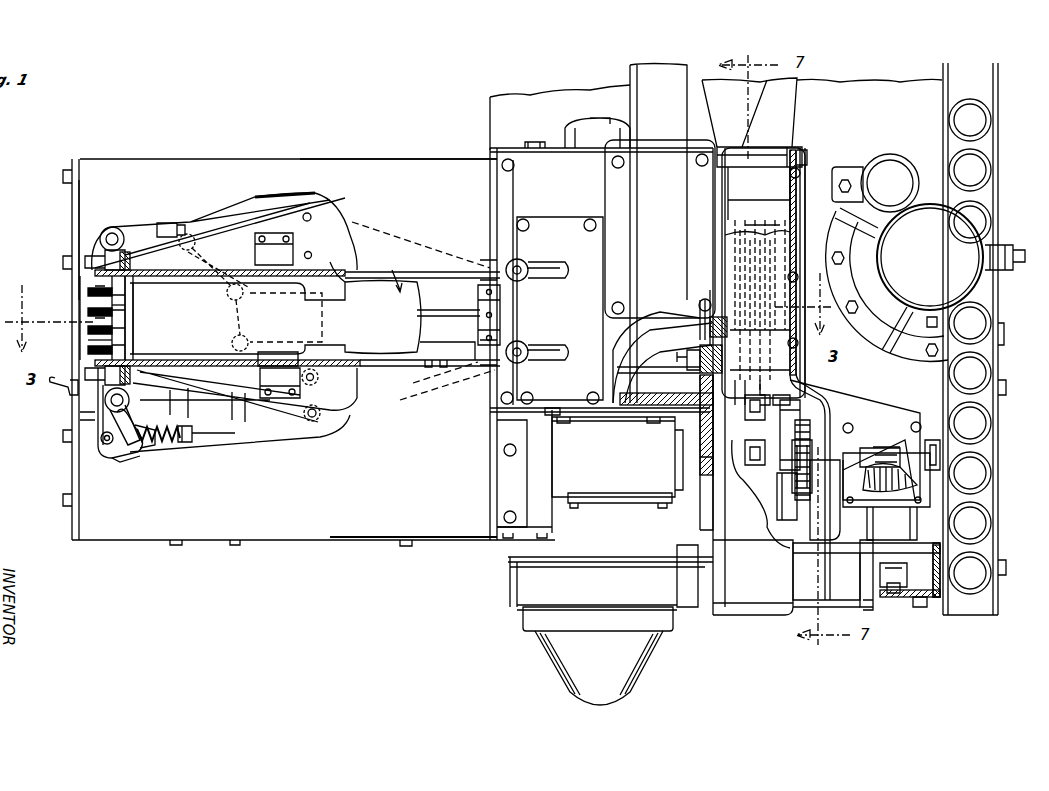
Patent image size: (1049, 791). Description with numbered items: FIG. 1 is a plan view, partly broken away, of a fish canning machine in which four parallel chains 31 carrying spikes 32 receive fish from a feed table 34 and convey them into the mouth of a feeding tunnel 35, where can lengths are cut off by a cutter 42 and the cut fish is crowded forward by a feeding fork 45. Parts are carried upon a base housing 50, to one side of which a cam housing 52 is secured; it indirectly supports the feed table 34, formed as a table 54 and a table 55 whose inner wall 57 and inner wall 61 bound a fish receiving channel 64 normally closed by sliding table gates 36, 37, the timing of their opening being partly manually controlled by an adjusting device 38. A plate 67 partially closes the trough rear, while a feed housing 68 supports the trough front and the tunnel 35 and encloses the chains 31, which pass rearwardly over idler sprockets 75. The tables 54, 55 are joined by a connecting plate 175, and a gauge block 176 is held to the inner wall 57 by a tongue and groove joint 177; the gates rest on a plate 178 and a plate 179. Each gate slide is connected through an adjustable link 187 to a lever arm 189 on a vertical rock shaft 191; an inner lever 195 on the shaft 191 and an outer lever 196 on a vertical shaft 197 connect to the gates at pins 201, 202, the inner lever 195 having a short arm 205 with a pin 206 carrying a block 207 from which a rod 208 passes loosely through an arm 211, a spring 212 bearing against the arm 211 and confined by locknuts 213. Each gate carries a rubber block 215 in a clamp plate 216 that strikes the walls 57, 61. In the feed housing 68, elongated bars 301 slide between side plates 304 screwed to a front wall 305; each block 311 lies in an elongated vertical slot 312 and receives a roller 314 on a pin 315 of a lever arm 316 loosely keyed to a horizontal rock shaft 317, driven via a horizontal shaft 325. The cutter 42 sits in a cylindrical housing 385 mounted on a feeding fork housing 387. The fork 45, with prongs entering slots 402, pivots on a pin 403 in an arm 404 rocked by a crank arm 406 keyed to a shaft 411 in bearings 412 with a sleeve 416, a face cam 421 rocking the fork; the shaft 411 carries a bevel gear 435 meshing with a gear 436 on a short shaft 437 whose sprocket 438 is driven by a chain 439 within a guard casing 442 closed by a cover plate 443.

The parallel chains 31 is at (88, 310).
The spikes 32 is at (88, 350).
The feed table 34 is at (196, 532).
The feeding tunnel 35 is at (728, 90).
The sliding table gate 36 is at (365, 400).
The sliding table gate 37 is at (330, 222).
The adjusting device 38 is at (56, 388).
The cutter 42 is at (790, 380).
The feeding fork 45 is at (760, 250).
The base housing 50 is at (888, 70).
The cam housing 52 is at (617, 462).
The table 54 is at (425, 530).
The table 55 is at (440, 159).
The inner wall 57 is at (345, 345).
The inner wall 61 is at (340, 280).
The fish receiving channel 64 is at (403, 270).
The plate 67 is at (112, 308).
The feed housing 68 is at (620, 393).
The idler sprockets 75 is at (110, 333).
The connecting plate 175 is at (79, 228).
The gauge block 176 is at (447, 347).
The tongue and groove joint 177 is at (434, 372).
The plate 178 is at (480, 350).
The plate 179 is at (128, 298).
The adjustable link 187 is at (245, 250).
The lever arm 189 is at (168, 230).
The vertical rock shaft 191 is at (112, 227).
The inner lever 195 is at (200, 238).
The outer lever 196 is at (283, 210).
The vertical shaft 197 is at (108, 447).
The pin 201 is at (310, 212).
The pin 202 is at (312, 253).
The short arm 205 is at (105, 425).
The pin 206 is at (95, 445).
The block 207 is at (100, 450).
The rod 208 is at (175, 445).
The arm 211 is at (130, 448).
The spring 212 is at (148, 445).
The locknuts 213 is at (195, 438).
The rubber block 215 is at (276, 299).
The clamp plate 216 is at (293, 245).
The elongated bars 301 is at (710, 265).
The side plates 304 is at (715, 275).
The front wall 305 is at (690, 290).
The block 311 is at (681, 352).
The elongated vertical slot 312 is at (712, 410).
The roller 314 is at (666, 361).
The pin 315 is at (700, 372).
The lever arm 316 is at (655, 375).
The horizontal rock shaft 317 is at (535, 142).
The horizontal shaft 325 is at (595, 120).
The cylindrical housing 385 is at (758, 175).
The feeding fork housing 387 is at (878, 400).
The slots 402 is at (778, 222).
The pin 403 is at (735, 430).
The arm 404 is at (755, 420).
The crank arm 406 is at (810, 447).
The shaft 411 is at (900, 458).
The bearings 412 is at (940, 455).
The sleeve 416 is at (800, 415).
The face cam 421 is at (760, 512).
The bevel gear 435 is at (875, 448).
The gear 436 is at (917, 480).
The short shaft 437 is at (897, 590).
The sprocket 438 is at (940, 595).
The chain 439 is at (910, 600).
The guard casing 442 is at (724, 622).
The cover plate 443 is at (790, 592).